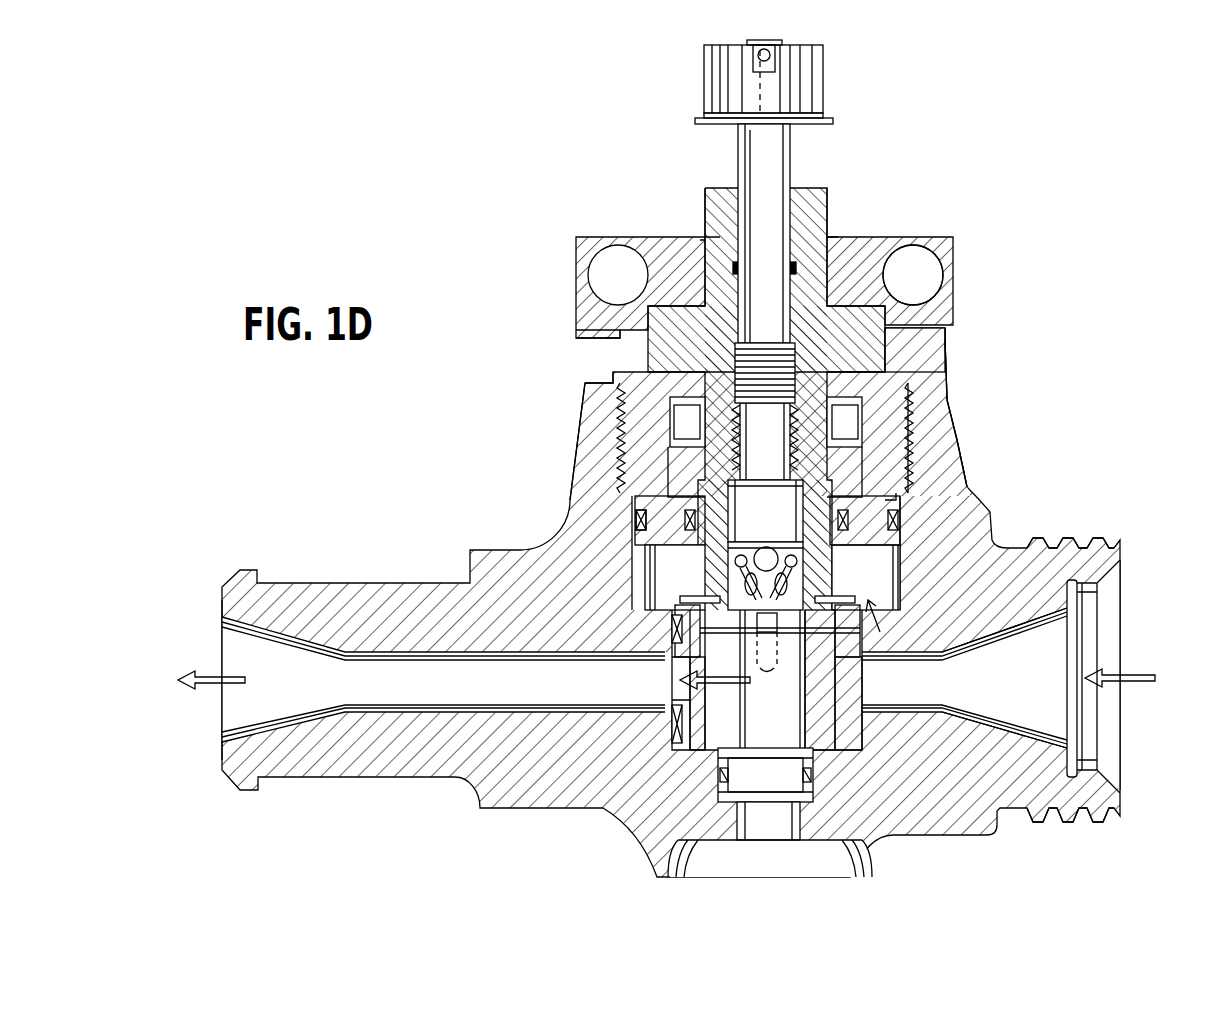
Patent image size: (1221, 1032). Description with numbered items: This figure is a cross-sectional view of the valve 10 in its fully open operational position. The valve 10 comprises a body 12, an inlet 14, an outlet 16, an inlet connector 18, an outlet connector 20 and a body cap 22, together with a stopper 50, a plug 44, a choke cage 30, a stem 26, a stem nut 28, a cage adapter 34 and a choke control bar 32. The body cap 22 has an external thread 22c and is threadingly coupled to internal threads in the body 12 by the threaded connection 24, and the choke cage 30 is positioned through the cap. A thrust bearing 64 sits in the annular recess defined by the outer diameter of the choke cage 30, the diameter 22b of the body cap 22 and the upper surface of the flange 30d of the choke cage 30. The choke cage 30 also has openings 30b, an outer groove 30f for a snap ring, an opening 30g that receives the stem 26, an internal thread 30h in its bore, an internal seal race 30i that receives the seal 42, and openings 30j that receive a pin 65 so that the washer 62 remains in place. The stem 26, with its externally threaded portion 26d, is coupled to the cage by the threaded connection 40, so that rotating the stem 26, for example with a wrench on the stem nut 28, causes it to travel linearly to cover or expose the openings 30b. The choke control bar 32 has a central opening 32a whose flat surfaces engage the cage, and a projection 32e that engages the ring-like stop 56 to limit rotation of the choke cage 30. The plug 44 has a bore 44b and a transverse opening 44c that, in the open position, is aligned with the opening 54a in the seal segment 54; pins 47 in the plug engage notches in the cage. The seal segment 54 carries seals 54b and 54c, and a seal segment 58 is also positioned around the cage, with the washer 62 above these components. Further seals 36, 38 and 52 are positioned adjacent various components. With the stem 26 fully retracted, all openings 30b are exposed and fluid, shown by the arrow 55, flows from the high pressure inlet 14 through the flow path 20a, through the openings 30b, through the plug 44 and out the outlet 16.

The valve 10 is at (535, 278).
The body 12 is at (407, 765).
The inlet 14 is at (1132, 645).
The outlet 16 is at (215, 650).
The inlet connector 18 is at (1085, 537).
The outlet connector 20 is at (240, 790).
The flow path 20a is at (905, 622).
The body cap 22 is at (906, 408).
The second bore 22b is at (892, 484).
The external thread 22c is at (912, 432).
The threaded connection 24 is at (625, 442).
The stem 26 is at (738, 153).
The externally threaded portion 26d is at (870, 374).
The stem nut 28 is at (822, 82).
The choke cage 30 is at (808, 190).
The openings 30b is at (766, 548).
The flange 30d is at (700, 472).
The groove 30f is at (725, 200).
The opening 30g is at (800, 214).
The internal thread 30h is at (900, 455).
The internal seal race 30i is at (735, 268).
The openings 30j is at (832, 578).
The choke control bar 32 is at (925, 237).
The central opening 32a is at (943, 272).
The projection 32e is at (578, 330).
The cage adapter 34 is at (662, 560).
The seal 36 is at (640, 524).
The seal 38 is at (690, 517).
The threaded connection 40 is at (722, 372).
The seal 42 is at (797, 268).
The plug 44 is at (812, 770).
The bore 44b is at (864, 742).
The opening 44c is at (742, 690).
The pins 47 is at (858, 652).
The stopper 50 is at (768, 797).
The seal 52 is at (806, 794).
The seal segment 54 is at (692, 742).
The opening 54a is at (675, 735).
The seal 54b is at (672, 745).
The seal 54c is at (672, 752).
The arrow 55 is at (205, 688).
The ring-like stop 56 is at (945, 336).
The seal segment 58 is at (862, 695).
The washer 62 is at (680, 625).
The thrust bearing 64 is at (666, 410).
The pins 65 is at (700, 600).